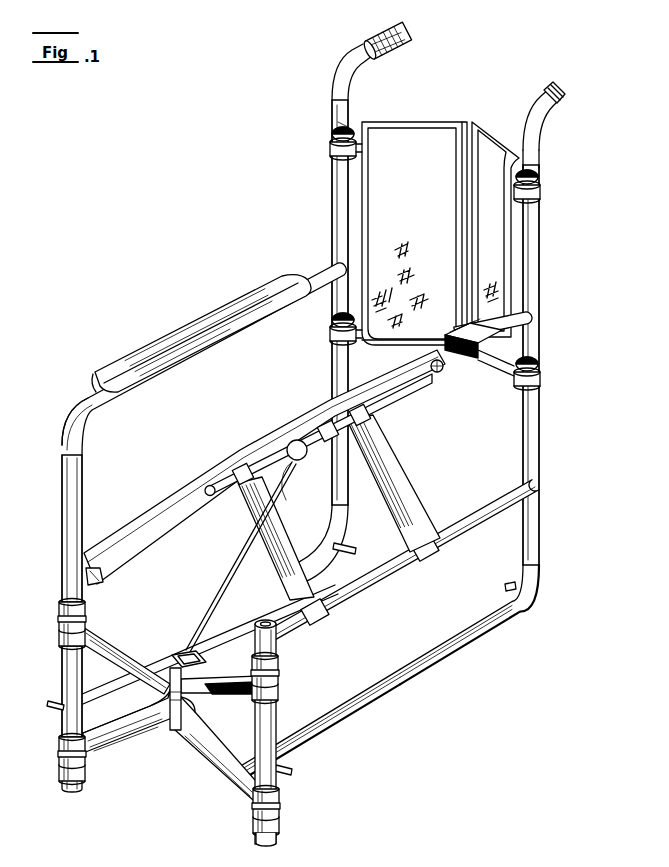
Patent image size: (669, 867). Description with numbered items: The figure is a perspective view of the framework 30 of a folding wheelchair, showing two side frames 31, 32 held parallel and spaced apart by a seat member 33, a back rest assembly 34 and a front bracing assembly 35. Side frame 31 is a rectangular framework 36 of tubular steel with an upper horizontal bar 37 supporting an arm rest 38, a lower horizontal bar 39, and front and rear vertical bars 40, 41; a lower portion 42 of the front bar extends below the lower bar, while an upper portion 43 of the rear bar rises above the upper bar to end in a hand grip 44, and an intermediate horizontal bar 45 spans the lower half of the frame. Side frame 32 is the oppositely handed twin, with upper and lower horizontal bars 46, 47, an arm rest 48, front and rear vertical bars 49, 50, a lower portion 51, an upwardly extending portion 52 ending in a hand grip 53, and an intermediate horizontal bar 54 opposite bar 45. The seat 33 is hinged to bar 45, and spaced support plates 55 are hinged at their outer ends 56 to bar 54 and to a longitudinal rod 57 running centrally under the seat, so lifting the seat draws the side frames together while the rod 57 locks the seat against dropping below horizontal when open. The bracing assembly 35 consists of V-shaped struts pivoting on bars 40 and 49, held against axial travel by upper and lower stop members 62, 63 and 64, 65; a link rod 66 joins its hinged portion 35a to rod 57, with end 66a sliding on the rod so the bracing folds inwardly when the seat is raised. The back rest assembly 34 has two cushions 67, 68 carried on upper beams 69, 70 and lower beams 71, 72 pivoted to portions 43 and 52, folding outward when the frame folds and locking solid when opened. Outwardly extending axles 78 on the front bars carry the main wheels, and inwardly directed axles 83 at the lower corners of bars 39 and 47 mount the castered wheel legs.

The framework 30 is at (192, 232).
The side frame 31 is at (73, 425).
The side frame 32 is at (389, 684).
The seat member 33 is at (267, 433).
The back rest assembly 34 is at (405, 150).
The front bracing assembly 35 is at (105, 749).
The hinged portion 35a is at (178, 706).
The rectangular framework 36 is at (78, 504).
The upper horizontal bar 37 is at (93, 402).
The arm rest 38 is at (275, 284).
The lower horizontal bar 39 is at (221, 621).
The front vertical bar 40 is at (70, 577).
The rear vertical bar 41 is at (333, 362).
The lower portion 42 is at (70, 791).
The upper portion 43 is at (338, 127).
The hand grip 44 is at (392, 47).
The intermediate horizontal bar 45 is at (95, 573).
The upper horizontal bar 46 is at (507, 338).
The lower horizontal bar 47 is at (468, 639).
The arm rest 48 is at (526, 333).
The front vertical bar 49 is at (264, 722).
The rear vertical bar 50 is at (538, 535).
The lower portion 51 is at (280, 836).
The upwardly extending portion 52 is at (532, 150).
The hand grip 53 is at (555, 110).
The intermediate horizontal bar 54 is at (377, 578).
The support plates 55 is at (398, 496).
The outer ends 56 is at (432, 556).
The longitudinal rod 57 is at (382, 411).
The upper stop member 62 is at (60, 616).
The lower stop member 63 is at (61, 770).
The upper stop member 64 is at (278, 671).
The lower stop member 65 is at (279, 820).
The link rod 66 is at (218, 594).
The end 66a is at (305, 467).
The cushion 67 is at (379, 148).
The cushion 68 is at (480, 155).
The upper beam 69 is at (331, 151).
The upper beam 70 is at (527, 193).
The lower beam 71 is at (331, 331).
The lower beam 72 is at (500, 368).
The axles 78 is at (52, 702).
The axles 83 is at (357, 548).